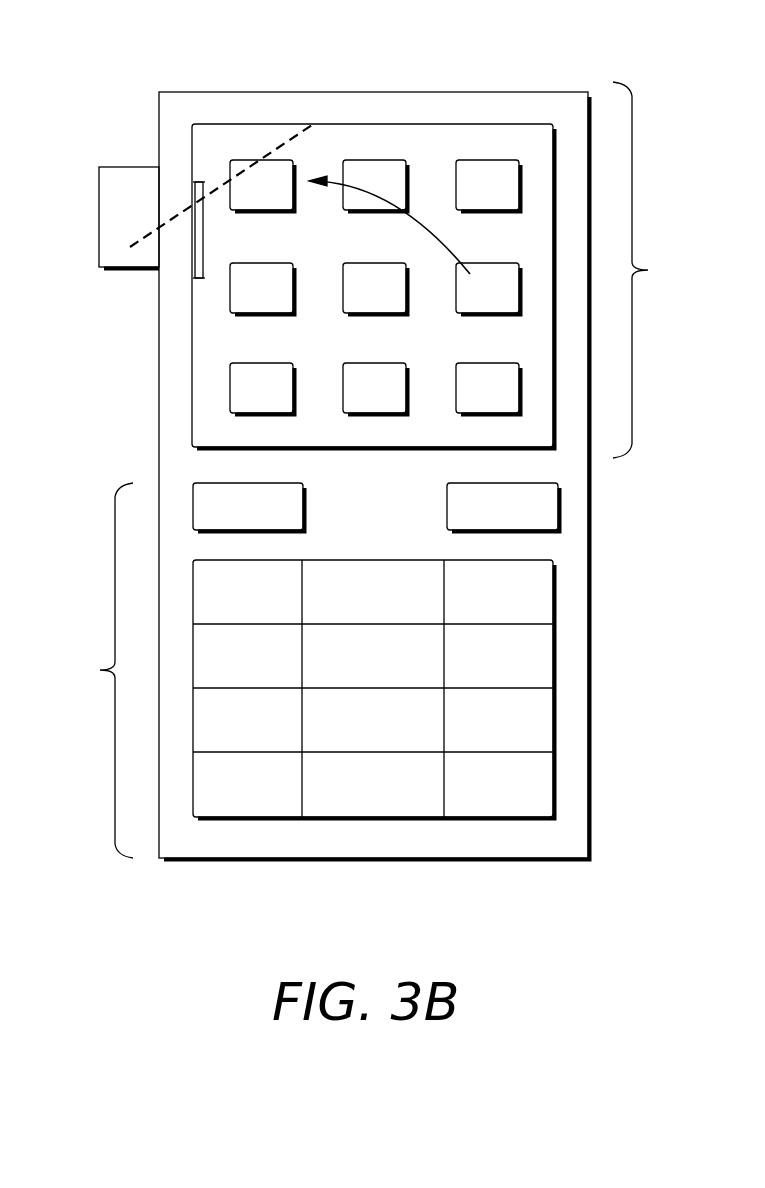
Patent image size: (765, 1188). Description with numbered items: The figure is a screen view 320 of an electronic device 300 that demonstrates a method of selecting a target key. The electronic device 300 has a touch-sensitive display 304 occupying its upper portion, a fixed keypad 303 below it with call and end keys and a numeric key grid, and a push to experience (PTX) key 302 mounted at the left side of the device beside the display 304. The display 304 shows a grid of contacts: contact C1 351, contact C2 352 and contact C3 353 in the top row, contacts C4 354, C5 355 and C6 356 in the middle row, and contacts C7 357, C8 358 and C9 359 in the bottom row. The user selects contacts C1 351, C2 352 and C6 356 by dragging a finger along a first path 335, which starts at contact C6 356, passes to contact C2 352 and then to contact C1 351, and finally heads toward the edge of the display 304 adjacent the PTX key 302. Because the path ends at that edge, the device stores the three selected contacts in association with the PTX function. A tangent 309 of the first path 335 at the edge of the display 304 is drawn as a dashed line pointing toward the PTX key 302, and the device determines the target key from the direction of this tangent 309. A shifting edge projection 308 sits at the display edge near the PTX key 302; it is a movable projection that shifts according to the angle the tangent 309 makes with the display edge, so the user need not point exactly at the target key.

The electronic device 300 is at (582, 940).
The push to experience (PTX) key 302 is at (98, 216).
The fixed keypad 303 is at (309, 670).
The touch-sensitive display 304 is at (348, 124).
The shifting edge projection 308 is at (204, 231).
The tangent 309 is at (283, 141).
The screen view 320 is at (654, 270).
The first path 335 is at (429, 231).
The contact C1 351 is at (295, 194).
The contact C2 352 is at (360, 159).
The contact C3 353 is at (473, 159).
The contact icon C4 354 is at (256, 315).
The contact icon C5 355 is at (341, 277).
The contact C6 356 is at (486, 262).
The contact icon C7 357 is at (275, 362).
The contact icon C8 358 is at (388, 362).
The contact icon C9 359 is at (505, 348).